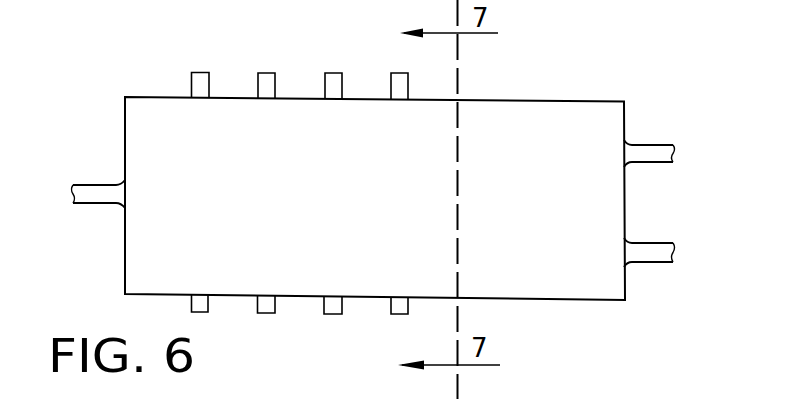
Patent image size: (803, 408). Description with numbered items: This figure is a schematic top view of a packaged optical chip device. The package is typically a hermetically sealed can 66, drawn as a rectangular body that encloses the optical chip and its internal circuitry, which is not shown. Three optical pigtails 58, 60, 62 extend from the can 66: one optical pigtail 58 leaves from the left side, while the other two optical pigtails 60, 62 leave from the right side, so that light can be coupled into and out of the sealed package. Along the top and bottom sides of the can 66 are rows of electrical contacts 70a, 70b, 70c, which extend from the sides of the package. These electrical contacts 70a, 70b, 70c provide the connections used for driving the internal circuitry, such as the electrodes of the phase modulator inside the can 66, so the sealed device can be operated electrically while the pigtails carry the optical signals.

The optical pigtail 58 is at (100, 187).
The optical pigtail 60 is at (642, 247).
The optical pigtail 62 is at (636, 145).
The hermetically sealed can 66 is at (287, 228).
The electrical contact 70a is at (195, 71).
The electrical contact 70b is at (270, 71).
The electrical contact 70c is at (327, 72).